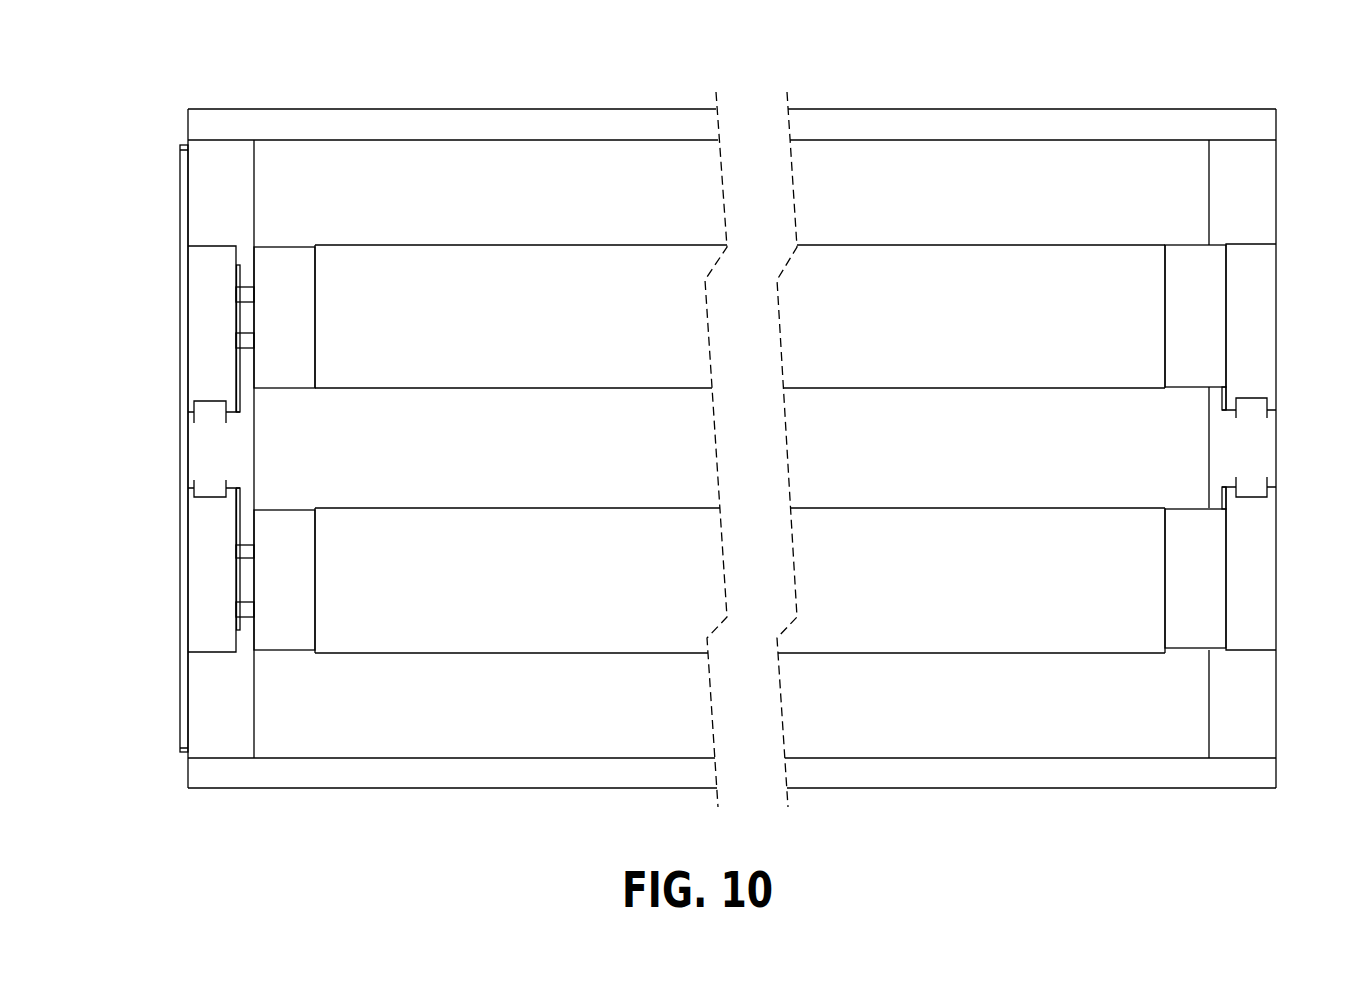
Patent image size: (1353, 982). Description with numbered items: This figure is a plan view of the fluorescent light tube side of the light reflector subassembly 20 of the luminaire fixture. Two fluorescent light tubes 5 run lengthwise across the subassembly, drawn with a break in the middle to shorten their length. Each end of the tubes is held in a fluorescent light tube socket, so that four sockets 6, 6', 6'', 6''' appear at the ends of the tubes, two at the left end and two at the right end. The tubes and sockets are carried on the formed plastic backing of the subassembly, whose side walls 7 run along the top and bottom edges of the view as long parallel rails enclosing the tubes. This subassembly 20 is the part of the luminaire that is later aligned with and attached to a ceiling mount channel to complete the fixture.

The fluorescent light tubes 5 is at (917, 240).
The fluorescent light tube socket 6 is at (183, 566).
The fluorescent light tube socket 6' is at (184, 334).
The fluorescent light tube socket 6'' is at (1279, 331).
The fluorescent light tube socket 6''' is at (1279, 563).
The side wall of plastic backing 7 is at (393, 108).
The light reflector subassembly 20 is at (725, 439).